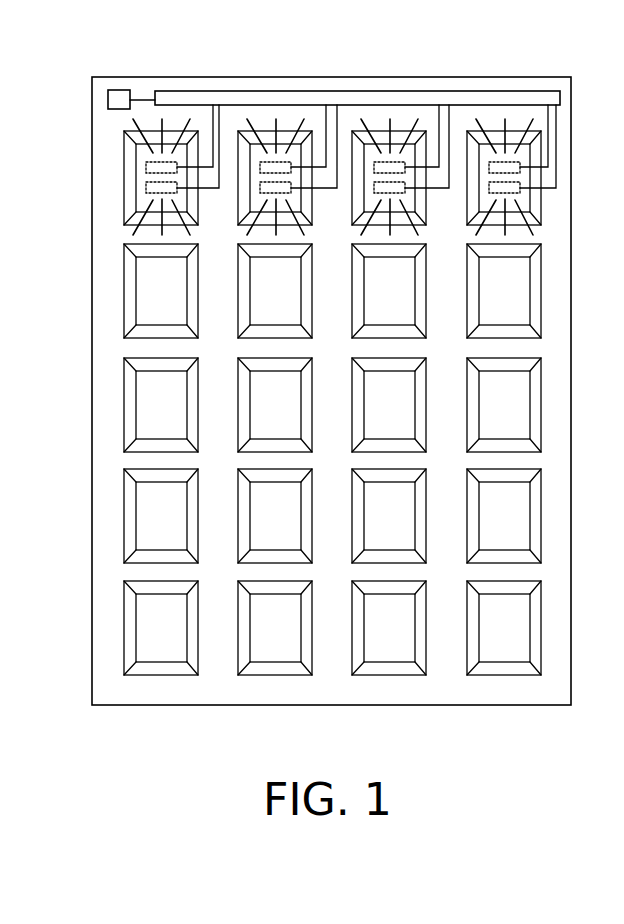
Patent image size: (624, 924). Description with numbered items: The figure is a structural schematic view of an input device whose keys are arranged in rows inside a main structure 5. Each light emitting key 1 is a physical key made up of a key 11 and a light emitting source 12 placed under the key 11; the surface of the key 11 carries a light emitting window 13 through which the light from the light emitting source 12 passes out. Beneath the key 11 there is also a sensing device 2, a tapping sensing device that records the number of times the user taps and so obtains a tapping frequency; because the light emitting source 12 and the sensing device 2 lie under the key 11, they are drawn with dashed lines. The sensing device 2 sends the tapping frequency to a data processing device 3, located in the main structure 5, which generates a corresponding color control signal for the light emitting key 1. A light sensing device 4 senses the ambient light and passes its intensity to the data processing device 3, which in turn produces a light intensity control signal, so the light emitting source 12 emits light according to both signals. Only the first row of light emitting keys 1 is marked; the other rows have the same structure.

The light emitting key 1 is at (108, 177).
The sensing device 2 is at (148, 162).
The data processing device 3 is at (358, 91).
The light sensing device 4 is at (120, 90).
The main structure 5 is at (290, 85).
The key 11 is at (124, 215).
The light emitting source 12 is at (148, 182).
The light emitting window 13 is at (136, 197).